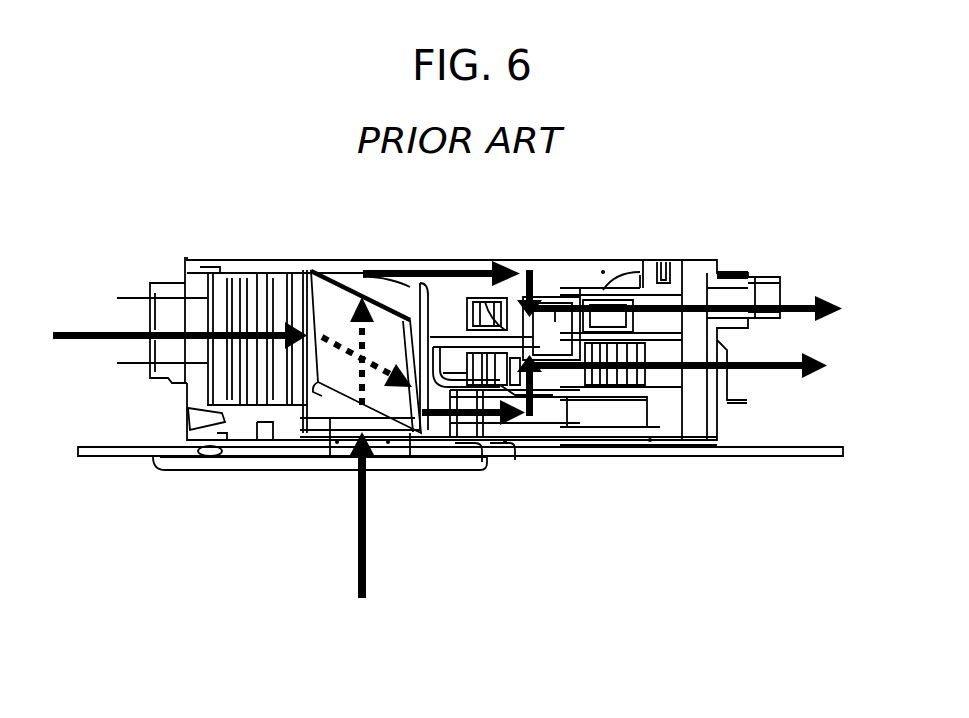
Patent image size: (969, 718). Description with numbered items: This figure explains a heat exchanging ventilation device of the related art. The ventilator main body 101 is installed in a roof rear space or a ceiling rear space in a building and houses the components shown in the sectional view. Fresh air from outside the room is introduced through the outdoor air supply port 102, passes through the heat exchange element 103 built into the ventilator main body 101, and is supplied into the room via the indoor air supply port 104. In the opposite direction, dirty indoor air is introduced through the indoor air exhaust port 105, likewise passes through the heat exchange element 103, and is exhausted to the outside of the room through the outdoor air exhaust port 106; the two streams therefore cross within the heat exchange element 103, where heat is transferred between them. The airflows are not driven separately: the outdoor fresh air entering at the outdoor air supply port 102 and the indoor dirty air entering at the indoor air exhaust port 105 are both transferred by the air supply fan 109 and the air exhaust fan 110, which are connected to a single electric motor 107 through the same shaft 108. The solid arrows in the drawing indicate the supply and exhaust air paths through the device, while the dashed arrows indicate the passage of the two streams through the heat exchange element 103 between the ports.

The ventilator main body 101 is at (461, 232).
The outdoor air supply port 102 is at (173, 312).
The heat exchange element 103 is at (311, 270).
The indoor air supply port 104 is at (773, 410).
The indoor air exhaust port 105 is at (340, 453).
The outdoor air exhaust port 106 is at (788, 288).
The electric motor 107 is at (572, 293).
The shaft 108 is at (553, 393).
The air supply fan 109 is at (623, 377).
The air exhaust fan 110 is at (643, 292).